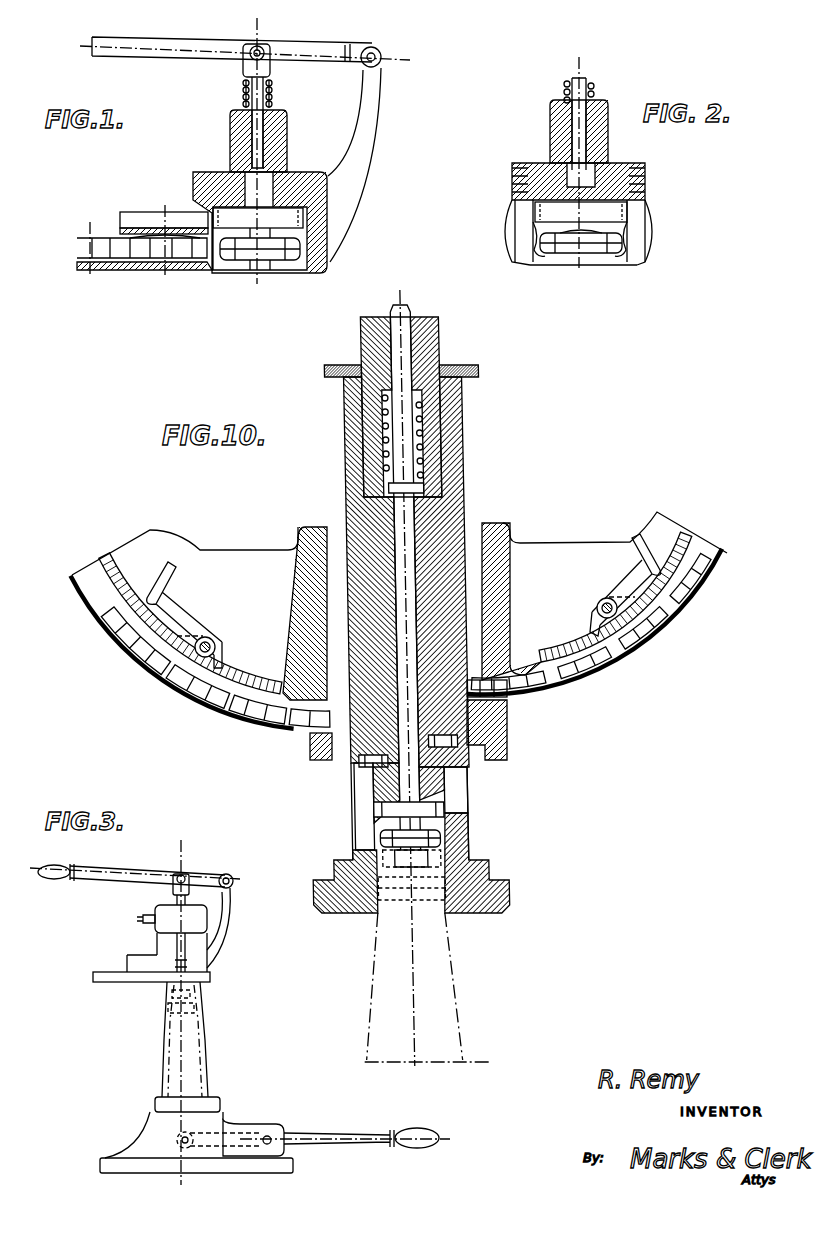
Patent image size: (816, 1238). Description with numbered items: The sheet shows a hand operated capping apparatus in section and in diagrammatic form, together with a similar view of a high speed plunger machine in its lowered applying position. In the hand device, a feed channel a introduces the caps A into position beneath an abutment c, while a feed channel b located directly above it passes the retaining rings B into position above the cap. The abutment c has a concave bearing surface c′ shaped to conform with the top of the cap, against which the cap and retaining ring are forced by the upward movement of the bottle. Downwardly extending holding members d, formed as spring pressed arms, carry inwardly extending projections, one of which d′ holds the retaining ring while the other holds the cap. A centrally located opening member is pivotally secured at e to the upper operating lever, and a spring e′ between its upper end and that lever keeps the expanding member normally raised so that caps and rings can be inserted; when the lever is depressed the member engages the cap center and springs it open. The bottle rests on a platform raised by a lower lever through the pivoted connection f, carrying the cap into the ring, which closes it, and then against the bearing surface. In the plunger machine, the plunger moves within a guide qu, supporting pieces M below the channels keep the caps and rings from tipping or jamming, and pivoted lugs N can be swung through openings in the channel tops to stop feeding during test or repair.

In FIG. 1, the pivotal connection e is at (263, 47).
In FIG. 2, the pivotal connection e is at (584, 80).
In FIG. 3, the pivotal connection e is at (183, 873).
In FIG. 1, the spring e′ is at (273, 92).
In FIG. 1, the abutment c is at (243, 205).
In FIG. 1, the bearing surface c′ is at (306, 170).
In FIG. 3, the bearing surface c′ is at (205, 958).
In FIG. 1, the feed channel for retaining rings b is at (120, 232).
In FIG. 3, the feed channel for retaining rings b is at (143, 956).
In FIG. 1, the retaining ring B is at (155, 216).
In FIG. 2, the retaining ring B is at (598, 215).
In FIG. 10, the retaining ring B is at (572, 667).
In FIG. 1, the feed channel for caps a is at (118, 271).
In FIG. 3, the feed channel for caps a is at (100, 980).
In FIG. 1, the cap A is at (165, 250).
In FIG. 2, the cap A is at (580, 243).
In FIG. 10, the cap A is at (230, 694).
In FIG. 2, the holding member d is at (527, 213).
In FIG. 2, the projection for retaining ring d′ is at (533, 232).
In FIG. 3, the pedestal / nozzle C is at (205, 1058).
In FIG. 10, the pedestal / nozzle C is at (440, 1000).
In FIG. 3, the pivoted connection f is at (190, 1141).
In FIG. 10, the guide qu is at (485, 527).
In FIG. 10, the pivoted lug N is at (172, 610).
In FIG. 10, the supporting piece M is at (312, 752).